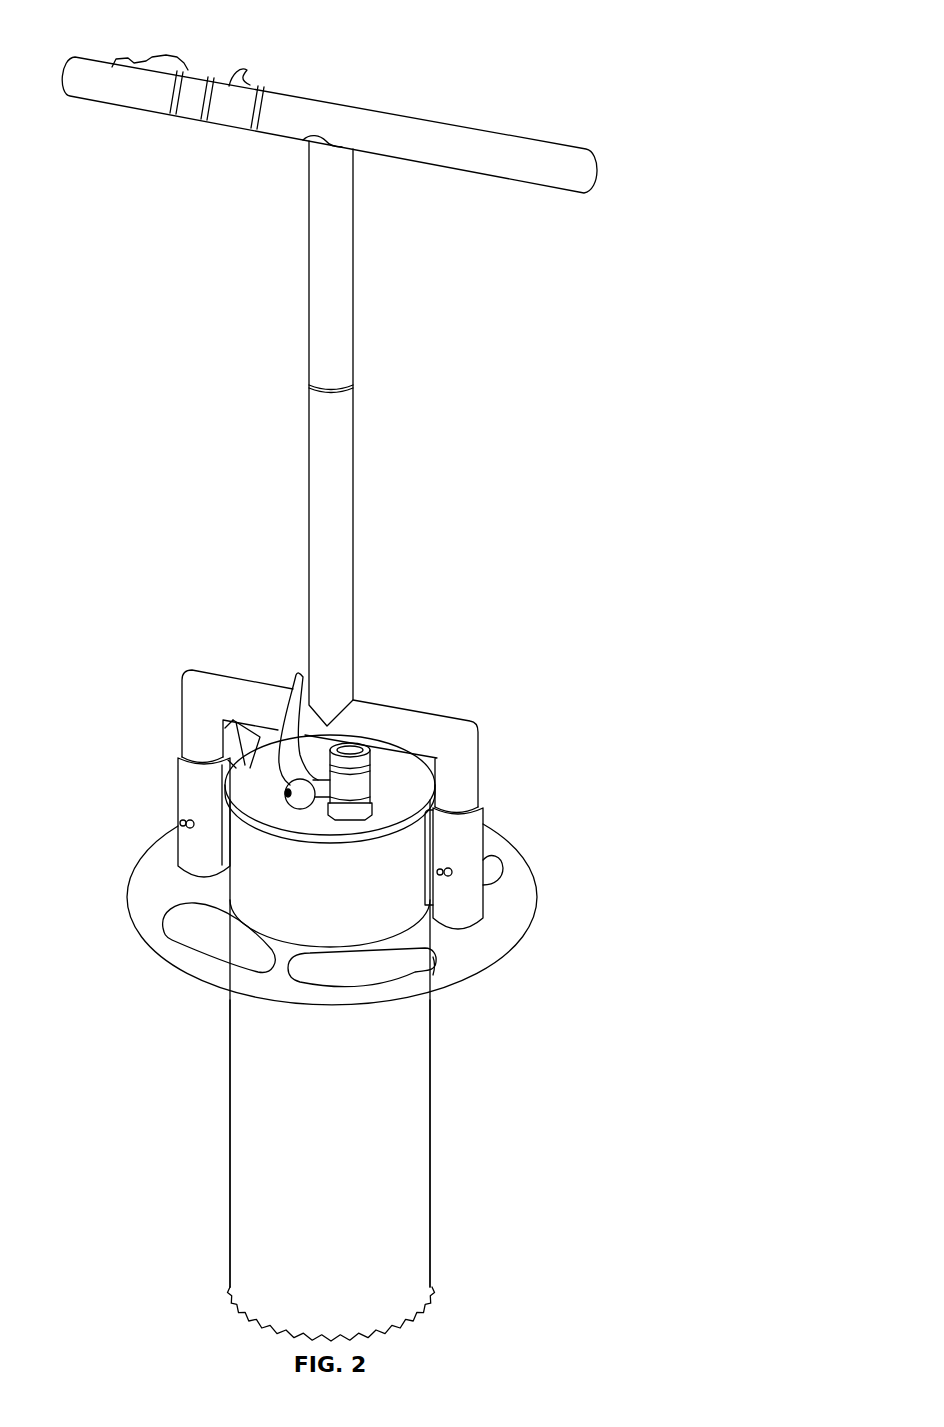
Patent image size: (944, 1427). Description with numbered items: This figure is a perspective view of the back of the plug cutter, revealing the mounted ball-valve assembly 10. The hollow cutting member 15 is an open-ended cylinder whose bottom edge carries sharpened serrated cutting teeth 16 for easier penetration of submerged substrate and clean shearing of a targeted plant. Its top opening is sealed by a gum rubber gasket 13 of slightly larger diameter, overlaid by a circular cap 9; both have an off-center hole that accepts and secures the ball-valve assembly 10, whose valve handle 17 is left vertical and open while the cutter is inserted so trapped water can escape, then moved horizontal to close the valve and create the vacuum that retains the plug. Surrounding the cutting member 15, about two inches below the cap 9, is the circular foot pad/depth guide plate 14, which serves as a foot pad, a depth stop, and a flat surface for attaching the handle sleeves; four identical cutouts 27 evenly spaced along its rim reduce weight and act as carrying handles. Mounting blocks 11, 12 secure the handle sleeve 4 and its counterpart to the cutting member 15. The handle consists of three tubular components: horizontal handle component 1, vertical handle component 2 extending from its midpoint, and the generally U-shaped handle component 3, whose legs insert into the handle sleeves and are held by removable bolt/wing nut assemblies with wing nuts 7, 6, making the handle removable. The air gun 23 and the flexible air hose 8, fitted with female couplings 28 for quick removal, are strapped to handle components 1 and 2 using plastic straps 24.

The handle component 1 is at (450, 153).
The handle component 2 is at (333, 482).
The U-shaped handle component 3 is at (448, 728).
The handle sleeve 4 is at (463, 850).
The wing nut 6 is at (452, 872).
The wing nut 7 is at (178, 822).
The flexible air hose 8 is at (257, 731).
The circular cap 9 is at (265, 737).
The ball-valve assembly 10 is at (347, 742).
The mounting block 11 is at (218, 833).
The mounting block 12 is at (428, 882).
The gum rubber gasket 13 is at (318, 843).
The foot pad/depth guide plate 14 is at (510, 912).
The hollow cutting member 15 is at (353, 1188).
The serrated cutting teeth 16 is at (337, 1330).
The valve handle 17 is at (288, 710).
The air gun 23 is at (158, 59).
The plastic straps 24 is at (248, 123).
The cutouts 27 is at (198, 923).
The female coupling 28 is at (267, 90).